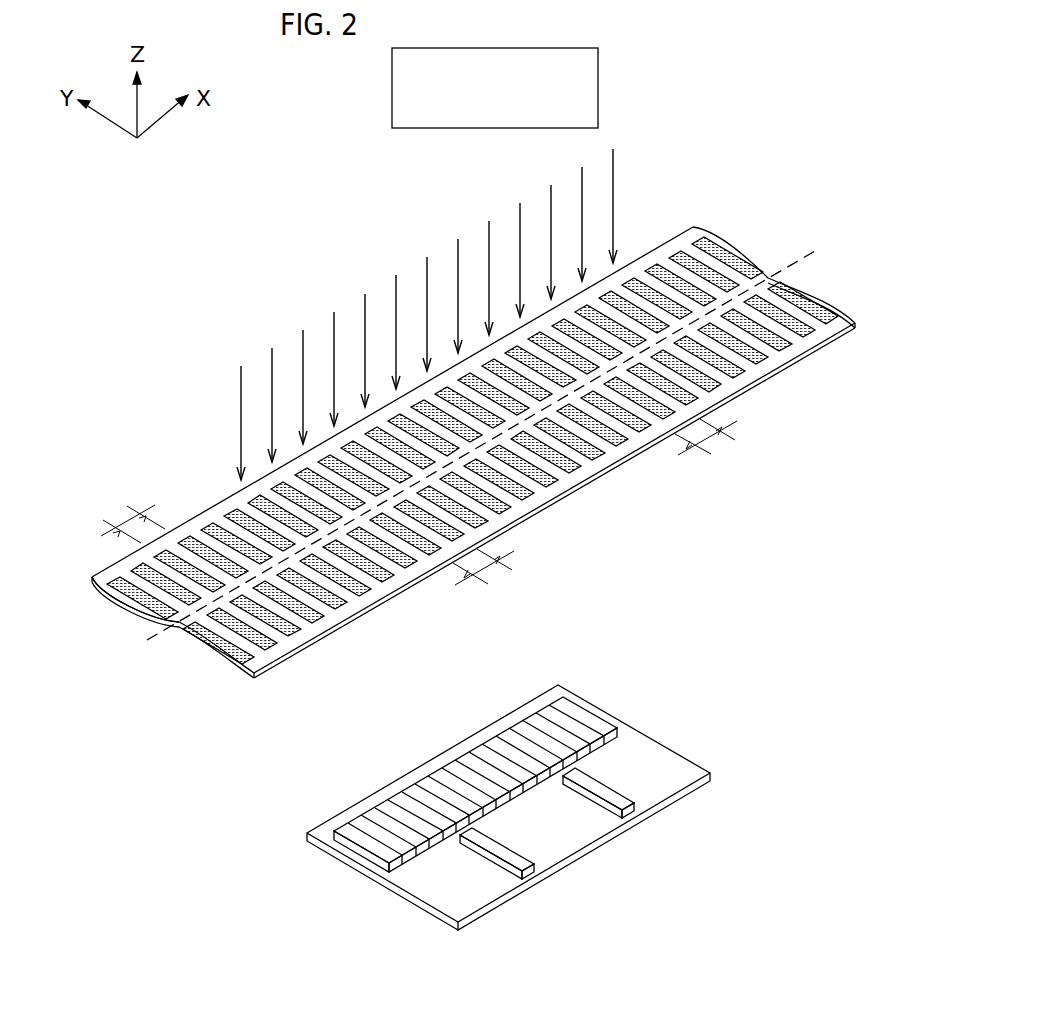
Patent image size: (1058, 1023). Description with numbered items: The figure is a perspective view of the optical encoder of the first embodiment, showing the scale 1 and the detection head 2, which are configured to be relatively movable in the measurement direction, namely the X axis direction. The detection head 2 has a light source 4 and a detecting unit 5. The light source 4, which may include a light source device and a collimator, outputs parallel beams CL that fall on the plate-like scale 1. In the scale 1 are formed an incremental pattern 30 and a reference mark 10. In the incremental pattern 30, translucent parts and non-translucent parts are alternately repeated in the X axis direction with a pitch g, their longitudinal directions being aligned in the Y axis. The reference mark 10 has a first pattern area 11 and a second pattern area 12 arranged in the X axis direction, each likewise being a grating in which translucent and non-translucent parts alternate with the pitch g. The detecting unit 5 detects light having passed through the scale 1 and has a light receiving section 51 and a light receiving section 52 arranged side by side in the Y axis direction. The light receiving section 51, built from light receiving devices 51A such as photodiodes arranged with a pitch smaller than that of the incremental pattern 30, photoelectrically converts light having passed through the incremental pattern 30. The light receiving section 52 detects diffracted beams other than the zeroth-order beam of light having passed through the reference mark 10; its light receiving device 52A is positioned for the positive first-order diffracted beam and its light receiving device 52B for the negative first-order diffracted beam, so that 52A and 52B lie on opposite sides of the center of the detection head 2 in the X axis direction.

The scale 1 is at (443, 451).
The detection head 2 is at (110, 321).
The light source 4 is at (599, 76).
The detecting unit 5 is at (483, 847).
The reference mark 10 is at (198, 656).
The first pattern area 11 is at (770, 406).
The second pattern area 12 is at (481, 455).
The incremental pattern 30 is at (105, 623).
The light receiving section 51 is at (435, 816).
The light receiving devices 51A is at (358, 826).
The light receiving section 52 is at (517, 834).
The light receiving device 52A is at (634, 812).
The light receiving device 52B is at (524, 872).
The parallel beams CL is at (654, 181).